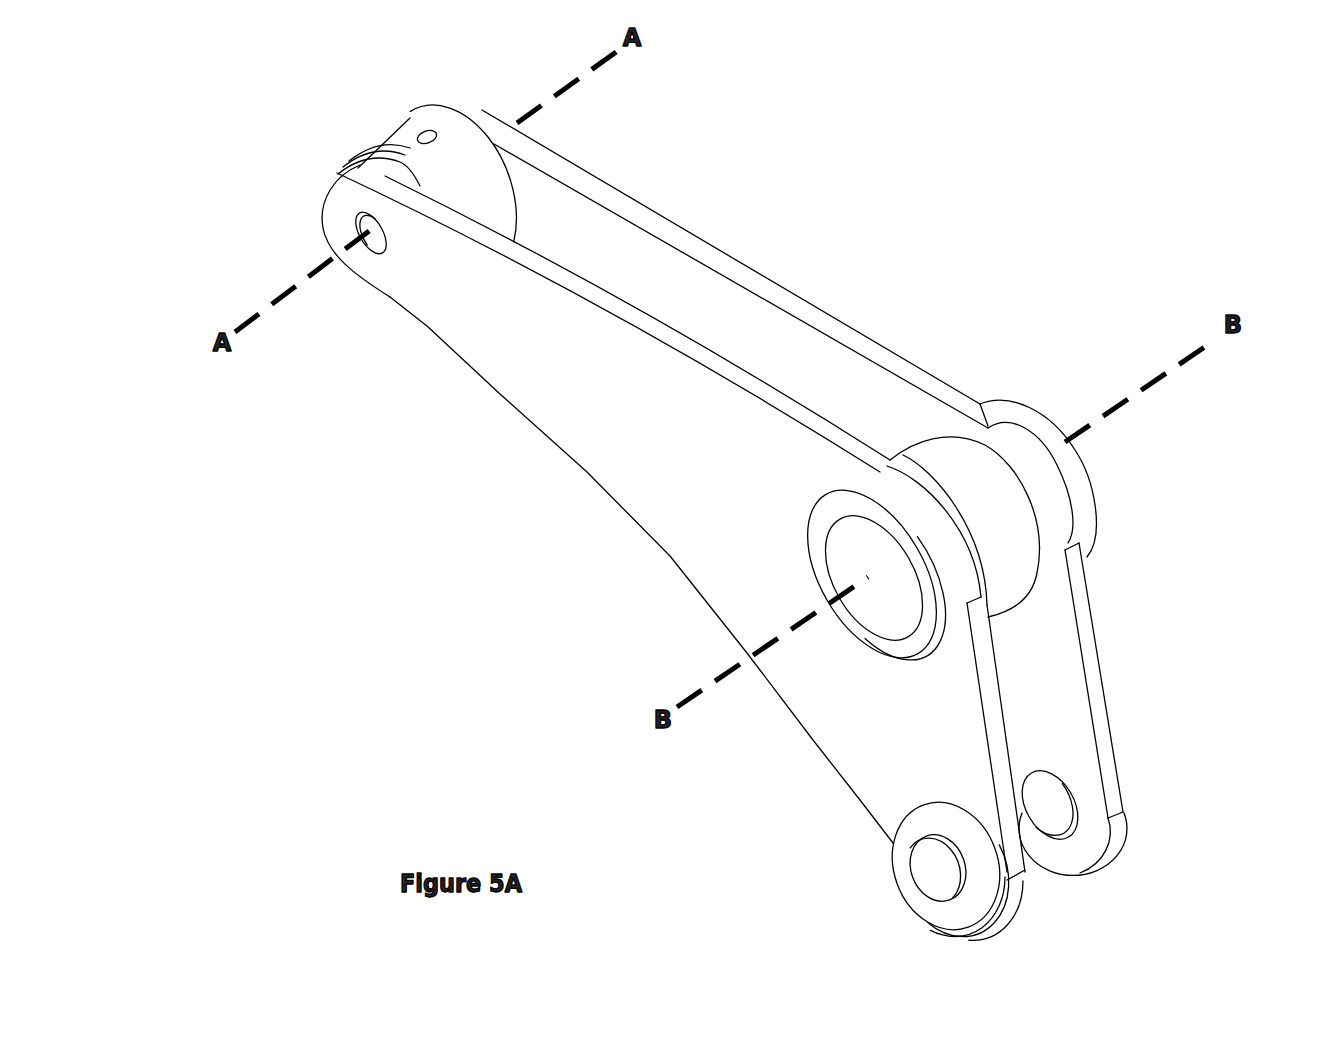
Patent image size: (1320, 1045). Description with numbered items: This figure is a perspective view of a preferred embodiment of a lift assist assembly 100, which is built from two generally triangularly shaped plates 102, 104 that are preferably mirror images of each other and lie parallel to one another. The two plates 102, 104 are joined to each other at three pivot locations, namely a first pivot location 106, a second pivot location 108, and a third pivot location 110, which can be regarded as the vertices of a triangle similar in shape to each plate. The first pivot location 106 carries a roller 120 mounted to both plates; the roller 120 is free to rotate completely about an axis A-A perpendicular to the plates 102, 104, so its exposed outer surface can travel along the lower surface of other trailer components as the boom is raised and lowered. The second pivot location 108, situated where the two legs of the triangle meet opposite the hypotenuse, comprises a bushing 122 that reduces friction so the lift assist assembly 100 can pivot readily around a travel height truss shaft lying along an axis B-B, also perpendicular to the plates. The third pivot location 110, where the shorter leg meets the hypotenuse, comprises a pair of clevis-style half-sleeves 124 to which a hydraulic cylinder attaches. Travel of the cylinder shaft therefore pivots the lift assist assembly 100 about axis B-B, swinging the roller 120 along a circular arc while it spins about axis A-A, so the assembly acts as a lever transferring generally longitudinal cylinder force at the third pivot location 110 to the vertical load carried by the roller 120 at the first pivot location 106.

The lift assist assembly 100 is at (735, 506).
The plate 102 is at (585, 473).
The plate 104 is at (812, 298).
The first pivot location 106 is at (298, 213).
The second pivot location 108 is at (1103, 476).
The third pivot location 110 is at (1143, 727).
The roller 120 is at (450, 183).
The bushing 122 is at (830, 612).
The half-sleeves 124 is at (1125, 797).